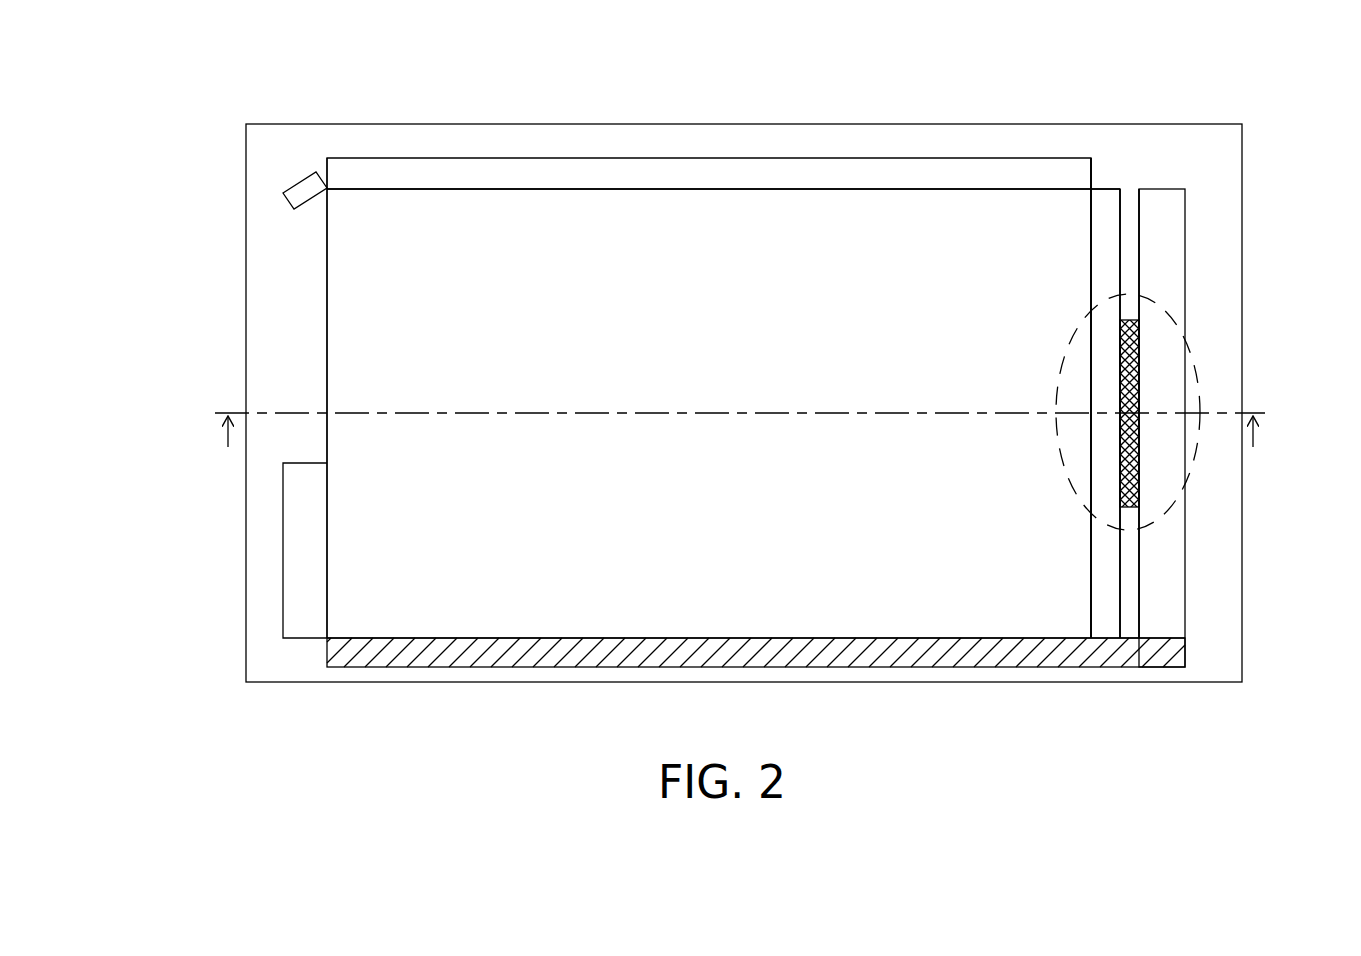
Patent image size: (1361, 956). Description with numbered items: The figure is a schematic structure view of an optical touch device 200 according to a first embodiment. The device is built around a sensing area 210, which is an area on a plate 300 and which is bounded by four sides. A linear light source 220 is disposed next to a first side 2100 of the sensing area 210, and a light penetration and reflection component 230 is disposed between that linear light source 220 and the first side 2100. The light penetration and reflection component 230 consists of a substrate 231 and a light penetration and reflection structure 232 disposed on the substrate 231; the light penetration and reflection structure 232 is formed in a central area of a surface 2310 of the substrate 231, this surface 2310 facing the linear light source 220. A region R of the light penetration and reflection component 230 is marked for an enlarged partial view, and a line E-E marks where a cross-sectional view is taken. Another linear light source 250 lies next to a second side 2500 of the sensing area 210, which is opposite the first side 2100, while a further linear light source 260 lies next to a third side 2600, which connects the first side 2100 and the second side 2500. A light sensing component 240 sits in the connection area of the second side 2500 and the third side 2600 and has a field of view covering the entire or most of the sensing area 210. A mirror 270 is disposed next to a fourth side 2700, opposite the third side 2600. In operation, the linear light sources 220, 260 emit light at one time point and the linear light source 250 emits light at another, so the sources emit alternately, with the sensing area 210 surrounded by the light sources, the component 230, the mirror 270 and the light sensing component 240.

The optical touch device 200 is at (1297, 93).
The plate 300 is at (1230, 202).
The sensing area 210 is at (596, 216).
The first side 2100 is at (1089, 245).
The linear light source 260 is at (870, 175).
The third side 2600 is at (694, 191).
The linear light source 220 is at (1182, 272).
The light penetration and reflection component 230 is at (995, 736).
The substrate 231 is at (1103, 623).
The light penetration and reflection structure 232 is at (1120, 467).
The surface 2310 is at (1121, 565).
The light sensing component 240 is at (292, 200).
The linear light source 250 is at (286, 560).
The second side 2500 is at (325, 323).
The mirror 270 is at (906, 660).
The fourth side 2700 is at (568, 633).
The region R is at (1190, 345).
The line E- E is at (741, 436).